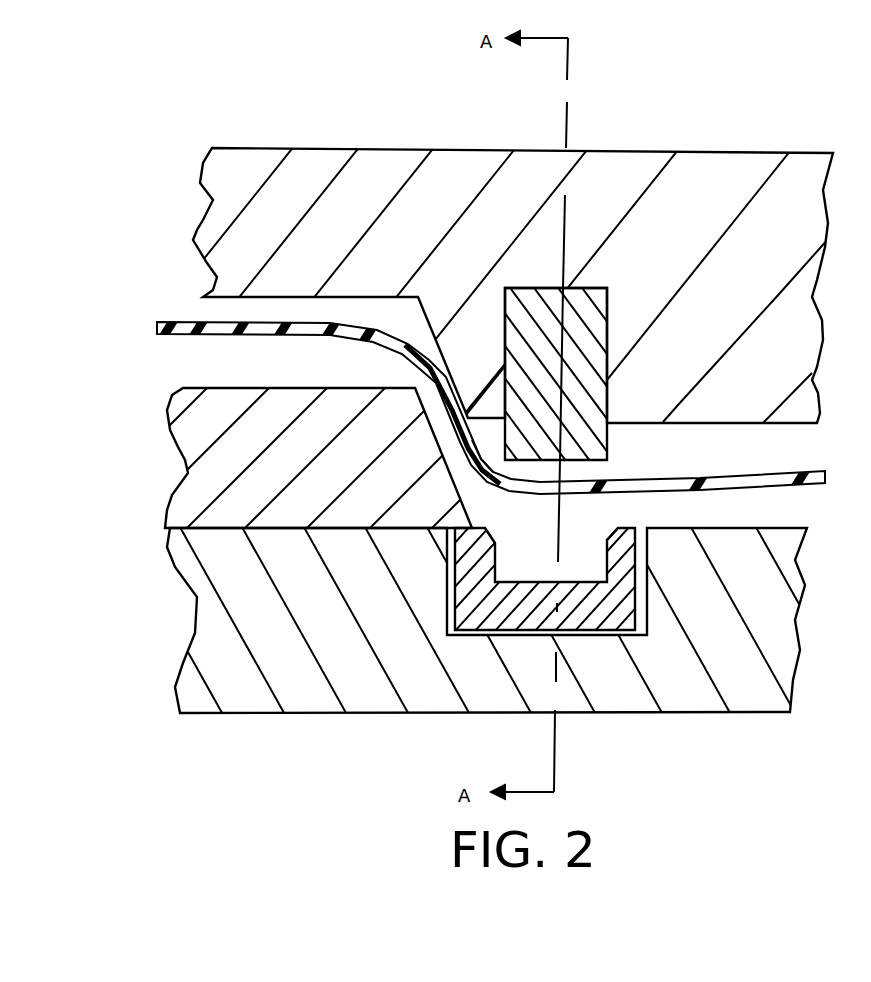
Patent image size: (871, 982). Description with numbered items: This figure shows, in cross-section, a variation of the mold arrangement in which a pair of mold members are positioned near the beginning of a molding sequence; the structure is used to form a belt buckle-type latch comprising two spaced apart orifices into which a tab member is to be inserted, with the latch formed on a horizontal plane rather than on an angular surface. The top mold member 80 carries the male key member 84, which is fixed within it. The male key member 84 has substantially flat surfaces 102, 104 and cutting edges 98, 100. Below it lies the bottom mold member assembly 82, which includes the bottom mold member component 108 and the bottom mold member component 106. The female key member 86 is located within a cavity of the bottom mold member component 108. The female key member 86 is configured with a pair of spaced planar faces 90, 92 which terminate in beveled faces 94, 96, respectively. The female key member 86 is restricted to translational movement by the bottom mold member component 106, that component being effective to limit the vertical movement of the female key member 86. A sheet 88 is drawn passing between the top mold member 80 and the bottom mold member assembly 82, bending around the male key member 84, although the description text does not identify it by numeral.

The top mold member 80 is at (348, 148).
The bottom mold member assembly 82 is at (462, 550).
The male key member 84 is at (587, 433).
The female key member 86 is at (637, 528).
The sheet metal workpiece 88 is at (260, 337).
The planar face 90 is at (500, 572).
The planar face 92 is at (604, 556).
The beveled face 94 is at (495, 538).
The beveled face 96 is at (617, 530).
The cutting edge 98 is at (483, 478).
The cutting edge 100 is at (599, 476).
The flat surface 102 is at (500, 450).
The flat surface 104 is at (607, 452).
The bottom mold member component 106 is at (195, 445).
The bottom mold member component 108 is at (780, 653).